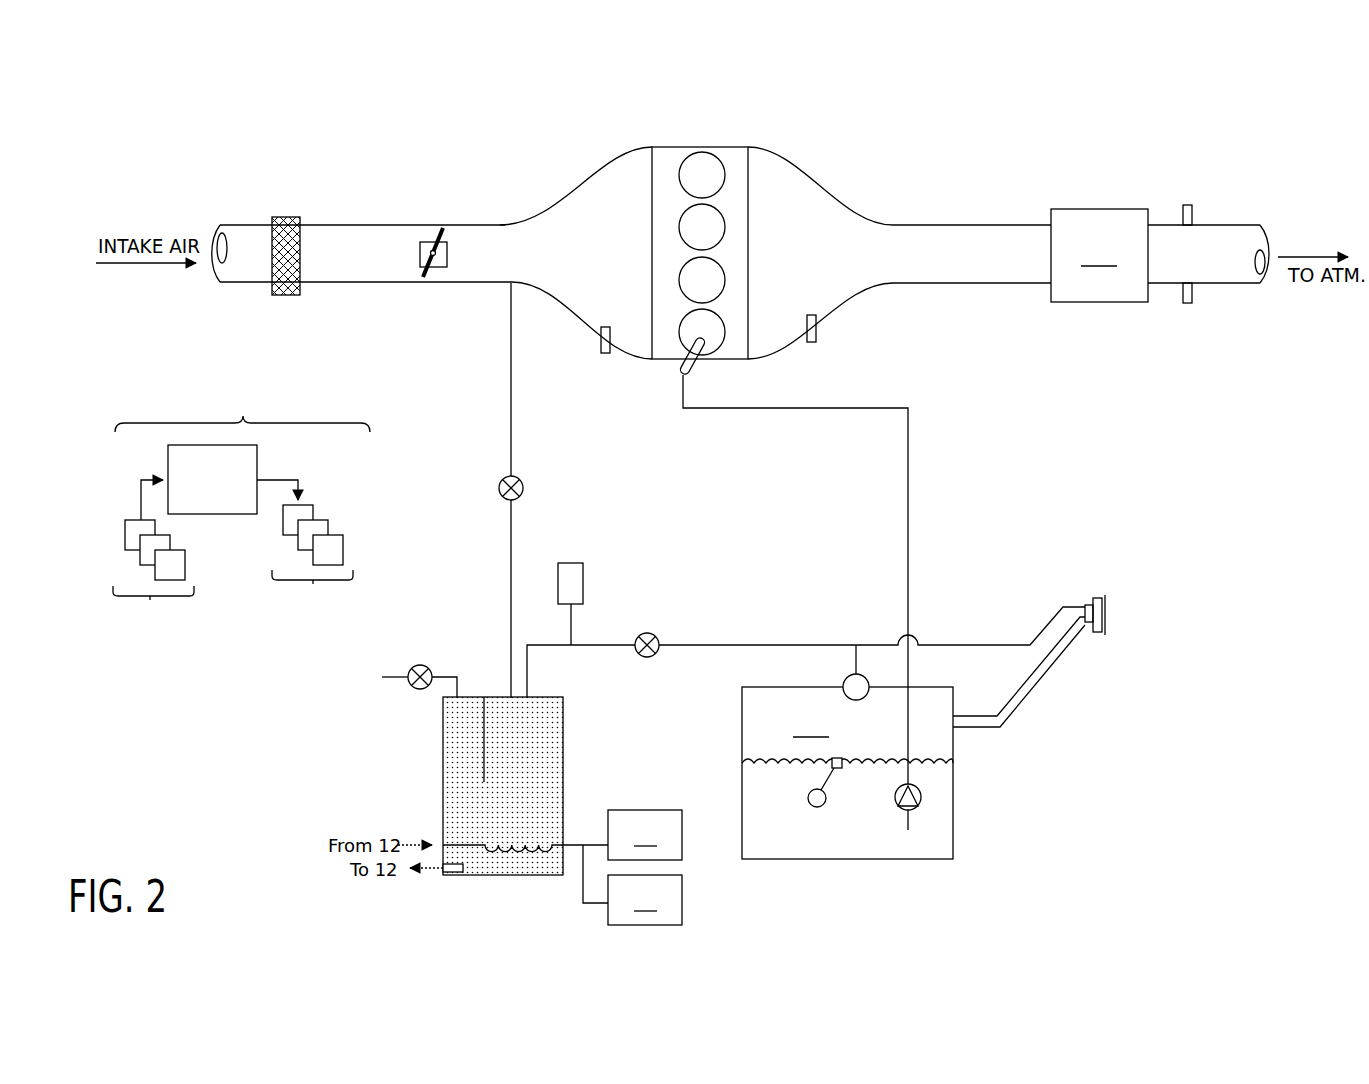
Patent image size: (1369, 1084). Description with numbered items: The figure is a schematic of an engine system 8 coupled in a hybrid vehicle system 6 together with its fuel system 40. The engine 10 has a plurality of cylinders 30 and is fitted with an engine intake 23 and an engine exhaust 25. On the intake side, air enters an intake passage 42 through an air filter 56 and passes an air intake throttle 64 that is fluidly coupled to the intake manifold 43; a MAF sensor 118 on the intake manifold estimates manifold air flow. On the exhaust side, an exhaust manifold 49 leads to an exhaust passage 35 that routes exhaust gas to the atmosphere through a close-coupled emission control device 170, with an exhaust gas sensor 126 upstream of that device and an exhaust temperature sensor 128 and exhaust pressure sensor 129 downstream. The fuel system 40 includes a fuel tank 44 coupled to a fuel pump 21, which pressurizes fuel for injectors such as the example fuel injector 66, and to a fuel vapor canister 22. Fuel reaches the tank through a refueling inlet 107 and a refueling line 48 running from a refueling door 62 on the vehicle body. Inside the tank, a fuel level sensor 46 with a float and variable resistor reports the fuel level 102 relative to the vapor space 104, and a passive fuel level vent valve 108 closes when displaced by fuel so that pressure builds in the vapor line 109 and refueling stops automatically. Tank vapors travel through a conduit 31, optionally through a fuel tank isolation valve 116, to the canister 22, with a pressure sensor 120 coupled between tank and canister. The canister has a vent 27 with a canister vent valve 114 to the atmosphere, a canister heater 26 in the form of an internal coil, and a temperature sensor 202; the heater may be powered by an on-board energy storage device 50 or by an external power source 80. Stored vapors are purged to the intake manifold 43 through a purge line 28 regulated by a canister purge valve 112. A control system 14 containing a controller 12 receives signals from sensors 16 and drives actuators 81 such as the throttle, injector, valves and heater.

The hybrid vehicle system 6 is at (120, 138).
The engine system 8 is at (1105, 208).
The engine 10 is at (717, 253).
The controller 12 is at (212, 479).
The control system 14 is at (242, 507).
The sensors 16 is at (157, 561).
The fuel pump 21 is at (921, 798).
The fuel vapor canister 22 is at (563, 766).
The engine intake 23 is at (574, 178).
The engine exhaust 25 is at (866, 186).
The canister heater 26 is at (512, 856).
The vent 27 is at (390, 677).
The purge line 28 is at (513, 420).
The cylinders 30 is at (720, 168).
The conduit 31 is at (758, 645).
The exhaust passage 35 is at (1243, 224).
The fuel system 40 is at (865, 620).
The intake passage 42 is at (250, 283).
The intake manifold 43 is at (613, 262).
The fuel tank 44 is at (742, 716).
The fuel level sensor 46 is at (843, 770).
The refueling line 48 is at (1022, 700).
The exhaust manifold 49 is at (829, 262).
The energy storage device 50 is at (645, 835).
The air filter 56 is at (286, 217).
The refueling door 62 is at (1108, 612).
The air intake throttle 64 is at (447, 252).
The fuel injector 66 is at (690, 365).
The power source 80 is at (645, 900).
The actuators 81 is at (314, 554).
The fuel level 102 is at (803, 768).
The vapor space 104 is at (812, 726).
The refueling inlet 107 is at (1097, 597).
The fuel level vent valve 108 is at (848, 677).
The vapor line 109 is at (1046, 625).
The canister purge valve 112 is at (521, 482).
The canister vent valve 114 is at (421, 667).
The fuel tank isolation valve 116 is at (648, 636).
The MAF sensor 118 is at (601, 333).
The pressure sensor 120 is at (583, 580).
The exhaust gas sensor 126 is at (816, 320).
The exhaust temperature sensor 128 is at (1188, 303).
The exhaust pressure sensor 129 is at (1188, 205).
The emission control device 170 is at (1099, 255).
The temperature sensor 202 is at (452, 875).